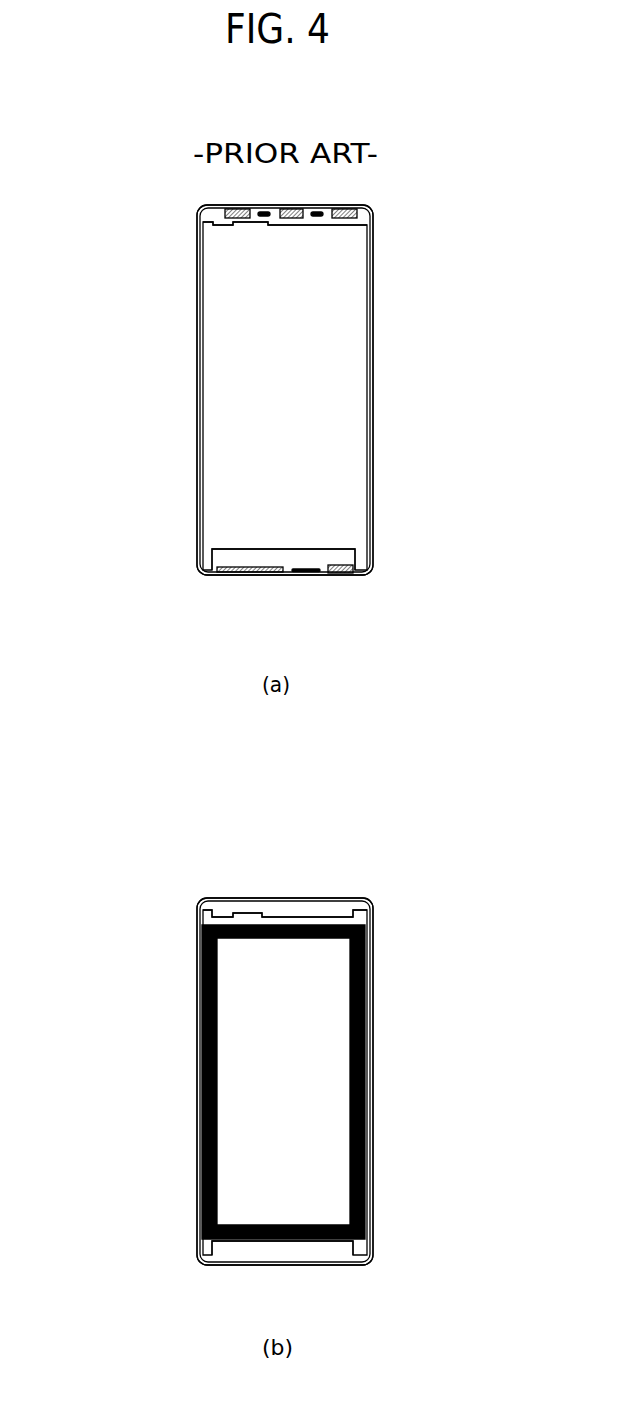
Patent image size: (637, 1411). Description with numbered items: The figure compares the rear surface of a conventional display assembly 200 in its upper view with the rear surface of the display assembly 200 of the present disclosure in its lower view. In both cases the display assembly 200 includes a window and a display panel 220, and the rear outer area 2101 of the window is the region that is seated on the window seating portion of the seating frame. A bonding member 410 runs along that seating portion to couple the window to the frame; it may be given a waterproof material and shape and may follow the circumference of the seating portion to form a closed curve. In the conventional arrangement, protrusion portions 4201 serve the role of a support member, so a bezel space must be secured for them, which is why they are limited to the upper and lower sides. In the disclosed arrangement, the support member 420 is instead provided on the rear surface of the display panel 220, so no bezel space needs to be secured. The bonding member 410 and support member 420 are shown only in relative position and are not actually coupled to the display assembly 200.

The display assembly 200 is at (142, 221).
The rear outer area of the window 2101 is at (363, 218).
The protrusion portions 4201 is at (338, 222).
The bonding member 410 is at (197, 367).
The display panel 220 is at (238, 423).
The support member 420 is at (205, 1177).